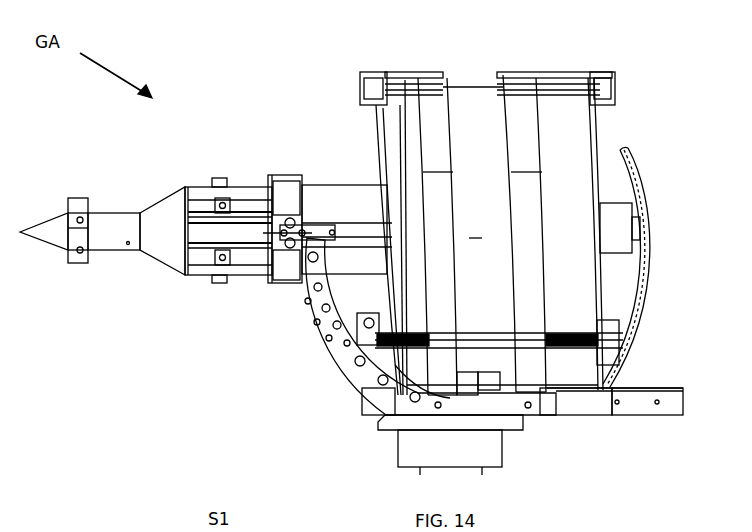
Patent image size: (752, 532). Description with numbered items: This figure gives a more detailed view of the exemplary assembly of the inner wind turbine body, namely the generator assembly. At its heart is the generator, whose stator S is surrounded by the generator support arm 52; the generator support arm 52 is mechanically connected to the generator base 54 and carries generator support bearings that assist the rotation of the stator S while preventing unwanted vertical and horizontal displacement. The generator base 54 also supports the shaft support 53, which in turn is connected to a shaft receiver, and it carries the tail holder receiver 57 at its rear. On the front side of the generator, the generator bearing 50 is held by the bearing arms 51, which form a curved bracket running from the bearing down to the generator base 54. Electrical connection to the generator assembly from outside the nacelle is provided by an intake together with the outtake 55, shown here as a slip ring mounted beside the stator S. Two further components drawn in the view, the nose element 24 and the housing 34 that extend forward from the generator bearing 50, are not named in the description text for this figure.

The nose cone / centering tip 24 is at (104, 256).
The housing 34 is at (200, 277).
The generator bearing 50 is at (283, 176).
The bearing arms 51 is at (343, 358).
The generator support arm 52 is at (445, 82).
The shaft support 53 is at (645, 190).
The generator base 54 is at (575, 405).
The outtake 55 is at (613, 203).
The tail holder receiver 57 is at (667, 407).
The stator S is at (490, 236).